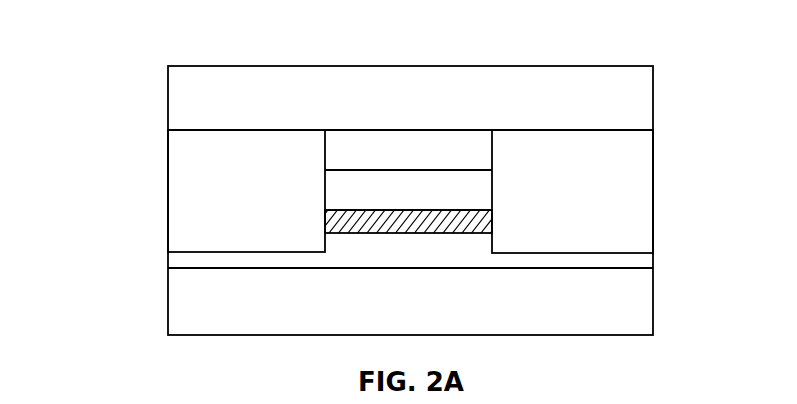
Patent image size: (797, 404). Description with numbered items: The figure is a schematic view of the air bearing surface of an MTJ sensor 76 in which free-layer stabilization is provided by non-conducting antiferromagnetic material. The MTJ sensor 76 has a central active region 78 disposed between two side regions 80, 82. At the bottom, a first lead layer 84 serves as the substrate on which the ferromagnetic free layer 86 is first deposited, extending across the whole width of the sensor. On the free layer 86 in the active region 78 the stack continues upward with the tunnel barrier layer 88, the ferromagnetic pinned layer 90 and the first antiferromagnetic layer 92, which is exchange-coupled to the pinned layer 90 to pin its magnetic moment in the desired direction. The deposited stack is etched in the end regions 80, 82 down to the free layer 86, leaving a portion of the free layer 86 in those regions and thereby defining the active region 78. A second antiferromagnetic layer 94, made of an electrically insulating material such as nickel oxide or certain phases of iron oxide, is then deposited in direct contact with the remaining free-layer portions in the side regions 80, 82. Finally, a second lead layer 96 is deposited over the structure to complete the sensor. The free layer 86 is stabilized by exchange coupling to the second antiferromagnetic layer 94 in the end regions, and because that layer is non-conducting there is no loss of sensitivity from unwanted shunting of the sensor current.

The MTJ sensor 76 is at (126, 75).
The central active region 78 is at (492, 57).
The side region 80 is at (167, 57).
The side region 82 is at (653, 57).
The first lead (L1) layer 84 is at (645, 302).
The FM free layer 86 is at (645, 265).
The tunnel barrier layer 88 is at (487, 226).
The FM pinned layer 90 is at (487, 186).
The first AFM layer 92 is at (487, 146).
The second AFM layer 94 is at (177, 148).
The second lead (L2) layer 96 is at (645, 97).